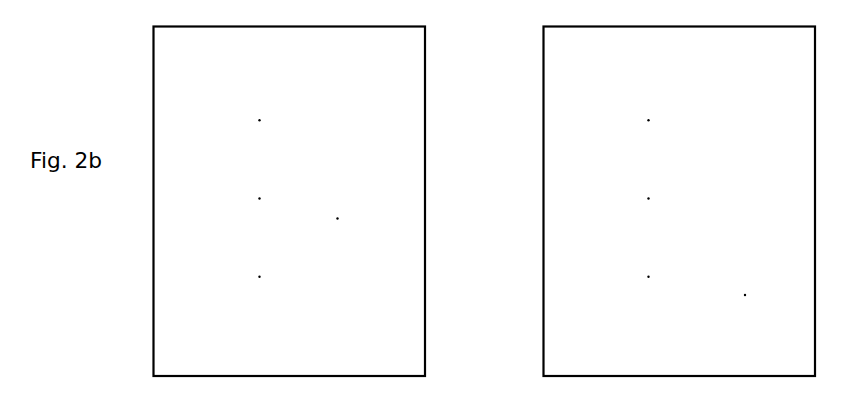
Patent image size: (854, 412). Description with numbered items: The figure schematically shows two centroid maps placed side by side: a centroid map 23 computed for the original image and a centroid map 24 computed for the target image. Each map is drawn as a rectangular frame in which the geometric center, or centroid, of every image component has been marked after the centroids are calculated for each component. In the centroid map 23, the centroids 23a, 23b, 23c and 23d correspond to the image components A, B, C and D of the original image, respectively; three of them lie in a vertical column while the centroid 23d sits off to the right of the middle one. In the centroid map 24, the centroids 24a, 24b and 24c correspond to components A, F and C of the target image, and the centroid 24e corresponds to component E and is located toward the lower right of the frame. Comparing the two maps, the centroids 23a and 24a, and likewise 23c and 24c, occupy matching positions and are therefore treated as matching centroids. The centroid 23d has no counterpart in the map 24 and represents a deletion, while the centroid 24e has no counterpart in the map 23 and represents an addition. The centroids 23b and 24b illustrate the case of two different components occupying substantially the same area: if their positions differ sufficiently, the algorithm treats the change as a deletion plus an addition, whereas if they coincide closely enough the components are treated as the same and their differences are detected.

The centroid map 23 is at (408, 77).
The centroid 23a is at (260, 120).
The centroid 23b is at (260, 198).
The centroid 23c is at (260, 277).
The centroid 23d is at (338, 218).
The centroid map 24 is at (796, 77).
The centroid 24a is at (648, 120).
The centroid 24b is at (648, 198).
The centroid 24c is at (648, 277).
The centroid 24e is at (745, 295).